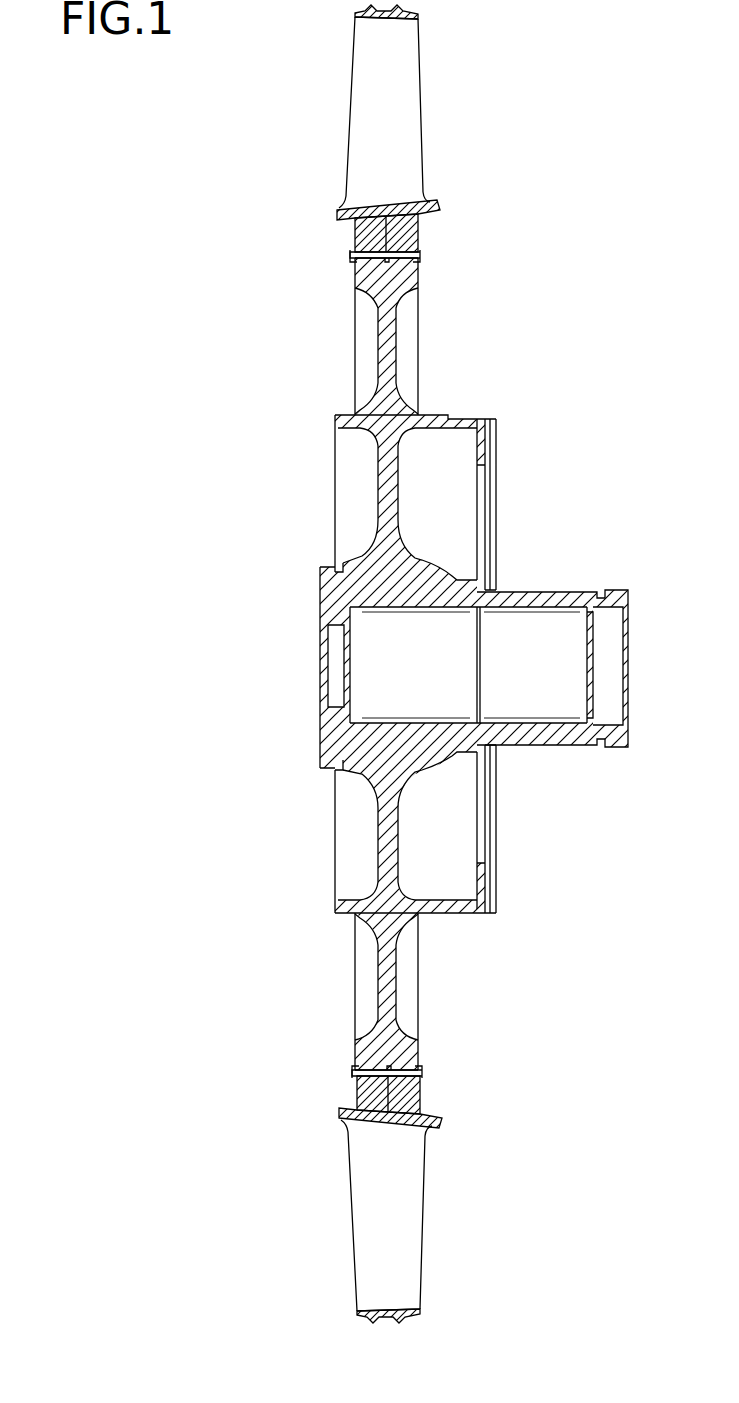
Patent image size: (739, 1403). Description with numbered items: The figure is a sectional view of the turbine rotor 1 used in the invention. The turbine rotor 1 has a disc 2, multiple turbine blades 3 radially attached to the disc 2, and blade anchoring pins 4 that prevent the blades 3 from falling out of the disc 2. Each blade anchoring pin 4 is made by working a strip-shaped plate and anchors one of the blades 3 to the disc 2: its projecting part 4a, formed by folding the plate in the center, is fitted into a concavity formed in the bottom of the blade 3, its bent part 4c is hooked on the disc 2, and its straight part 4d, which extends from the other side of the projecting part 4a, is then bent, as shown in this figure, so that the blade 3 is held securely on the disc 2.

The turbine rotor 1 is at (228, 231).
The disc 2 is at (422, 377).
The turbine blade 3 is at (444, 104).
The blade anchoring pin 4 is at (446, 251).
The projecting part 4a is at (383, 240).
The bent part 4c is at (423, 262).
The straight part 4d is at (352, 261).